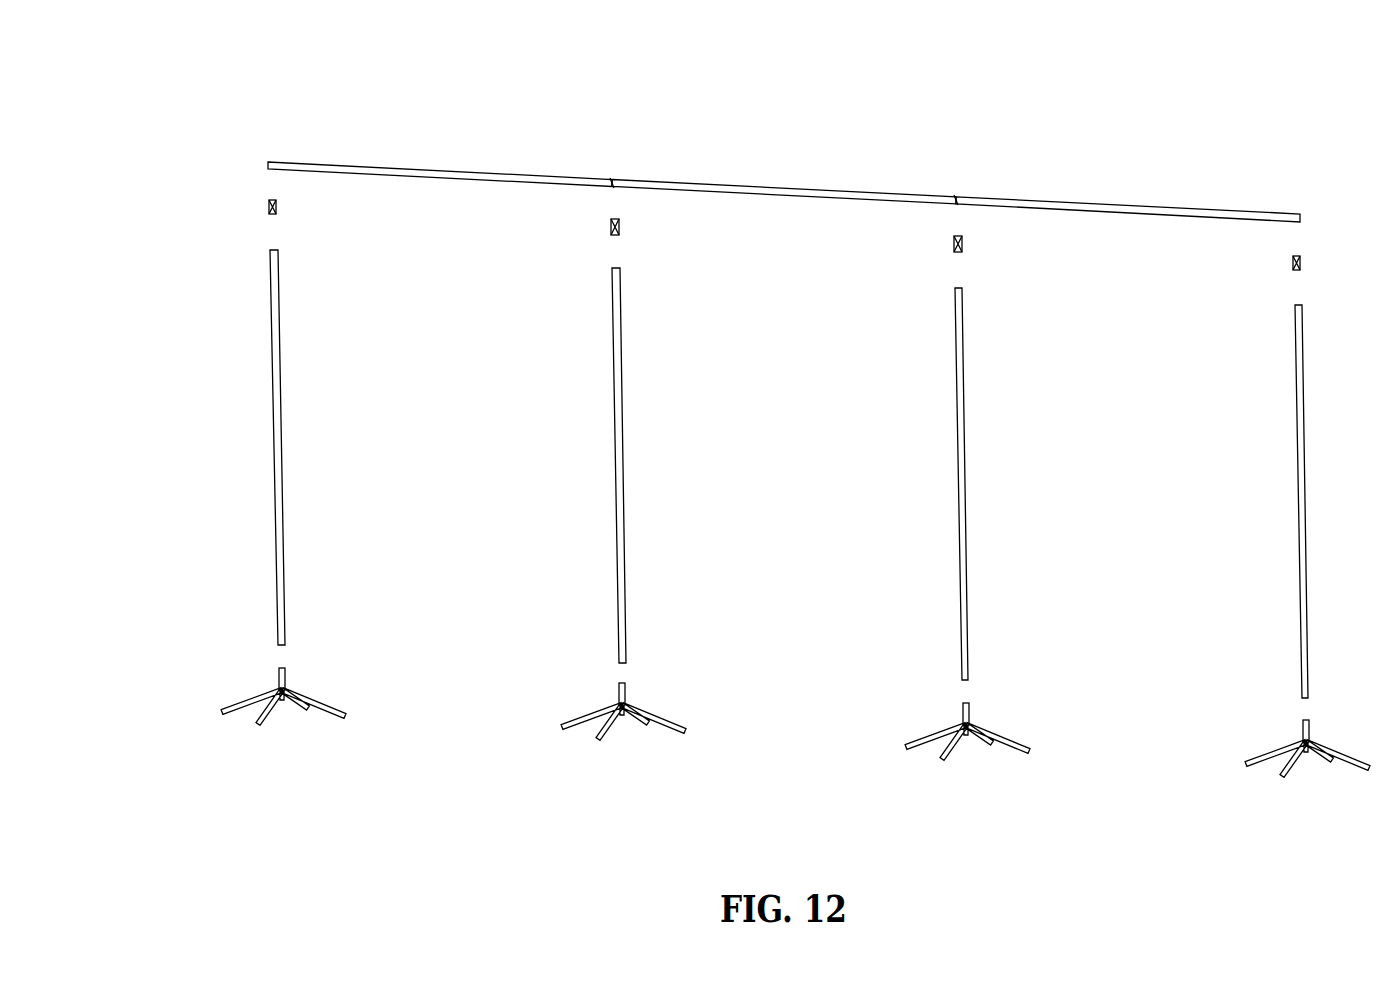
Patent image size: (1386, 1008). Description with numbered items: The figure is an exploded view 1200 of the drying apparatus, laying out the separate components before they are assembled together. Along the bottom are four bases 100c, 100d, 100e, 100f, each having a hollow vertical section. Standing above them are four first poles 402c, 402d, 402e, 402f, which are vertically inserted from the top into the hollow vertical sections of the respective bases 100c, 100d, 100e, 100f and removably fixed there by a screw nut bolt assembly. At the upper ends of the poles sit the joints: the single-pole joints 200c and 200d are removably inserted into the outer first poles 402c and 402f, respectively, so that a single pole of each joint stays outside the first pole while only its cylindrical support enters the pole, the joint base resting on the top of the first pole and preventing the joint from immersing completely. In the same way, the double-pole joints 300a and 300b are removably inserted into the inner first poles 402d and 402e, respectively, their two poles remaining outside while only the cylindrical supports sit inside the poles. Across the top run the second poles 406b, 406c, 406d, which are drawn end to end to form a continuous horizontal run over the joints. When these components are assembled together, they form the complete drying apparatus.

The exploded view 1200 is at (250, 97).
The second pole 406b is at (410, 171).
The second pole 406c is at (752, 189).
The second pole 406d is at (1132, 210).
The single-pole joint 200c is at (268, 208).
The single-pole joint 200d is at (1292, 262).
The double-pole joint 300a is at (610, 228).
The double-pole joint 300b is at (953, 245).
The first pole 402c is at (278, 488).
The first pole 402d is at (616, 488).
The first pole 402e is at (958, 488).
The first pole 402f is at (1297, 488).
The base 100c is at (268, 690).
The base 100d is at (600, 720).
The base 100e is at (935, 735).
The base 100f is at (1282, 752).